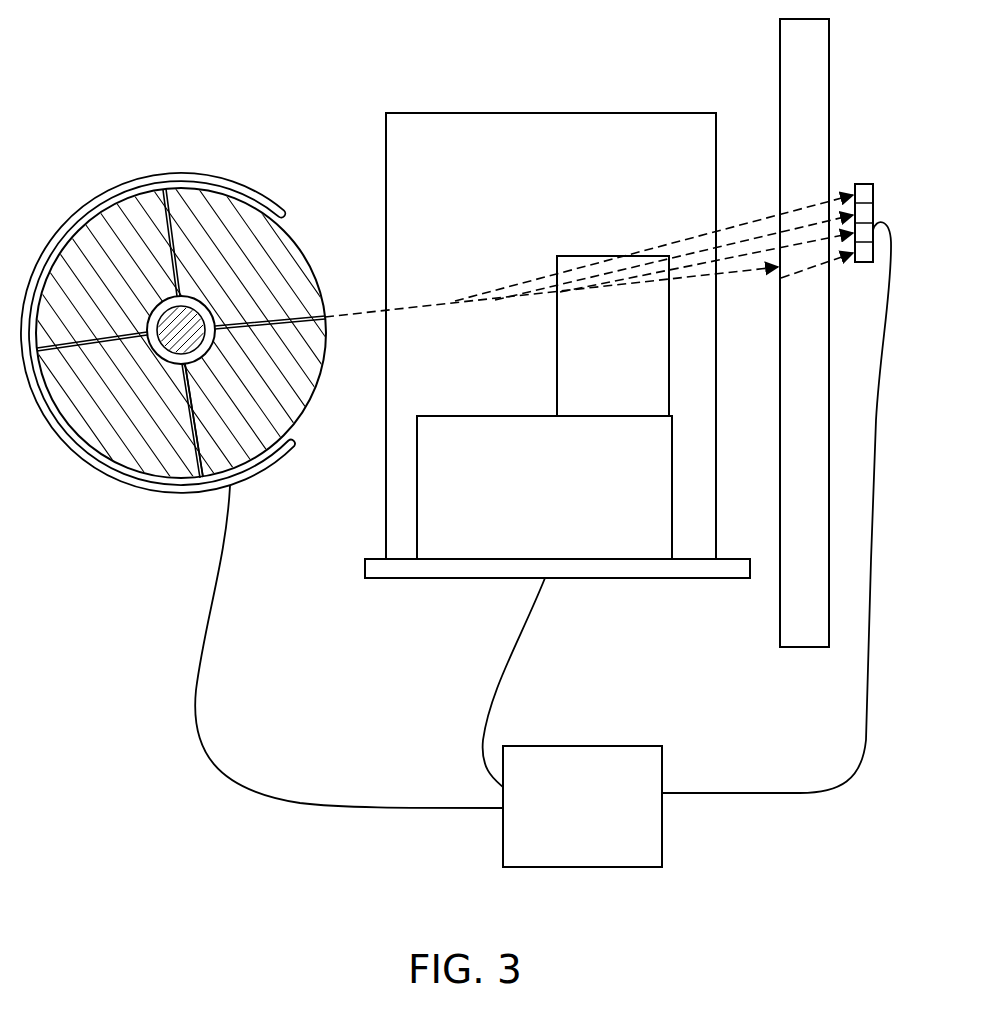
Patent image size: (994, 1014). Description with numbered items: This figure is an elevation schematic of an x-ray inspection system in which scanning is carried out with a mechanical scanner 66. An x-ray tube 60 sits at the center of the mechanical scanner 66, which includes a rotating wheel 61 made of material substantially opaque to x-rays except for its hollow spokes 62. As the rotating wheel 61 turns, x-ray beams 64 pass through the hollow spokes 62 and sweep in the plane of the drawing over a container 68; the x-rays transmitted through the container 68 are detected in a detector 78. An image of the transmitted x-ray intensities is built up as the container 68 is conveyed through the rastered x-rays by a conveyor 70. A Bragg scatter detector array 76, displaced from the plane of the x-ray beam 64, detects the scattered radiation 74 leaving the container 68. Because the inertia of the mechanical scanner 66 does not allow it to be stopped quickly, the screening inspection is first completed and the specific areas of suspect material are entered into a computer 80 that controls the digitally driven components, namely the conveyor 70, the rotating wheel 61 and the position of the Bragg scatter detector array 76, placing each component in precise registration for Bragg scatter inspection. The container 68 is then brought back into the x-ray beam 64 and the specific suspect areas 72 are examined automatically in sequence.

The x-ray tube 60 is at (194, 344).
The rotating wheel 61 is at (238, 273).
The hollow spokes 62 is at (190, 468).
The x-ray beams 64 is at (350, 313).
The mechanical scanner 66 is at (98, 489).
The container 68 is at (387, 460).
The conveyor 70 is at (430, 578).
The suspect areas 72 is at (597, 256).
The scattered radiation 74 is at (745, 242).
The Bragg scatter detector array 76 is at (863, 184).
The detector 78 is at (805, 650).
The computer 80 is at (596, 820).